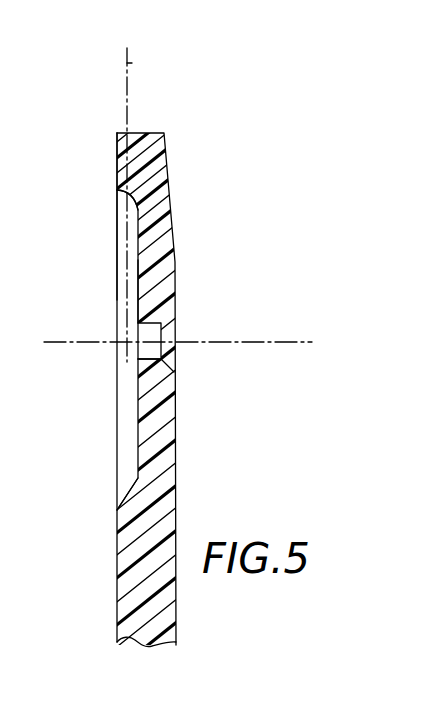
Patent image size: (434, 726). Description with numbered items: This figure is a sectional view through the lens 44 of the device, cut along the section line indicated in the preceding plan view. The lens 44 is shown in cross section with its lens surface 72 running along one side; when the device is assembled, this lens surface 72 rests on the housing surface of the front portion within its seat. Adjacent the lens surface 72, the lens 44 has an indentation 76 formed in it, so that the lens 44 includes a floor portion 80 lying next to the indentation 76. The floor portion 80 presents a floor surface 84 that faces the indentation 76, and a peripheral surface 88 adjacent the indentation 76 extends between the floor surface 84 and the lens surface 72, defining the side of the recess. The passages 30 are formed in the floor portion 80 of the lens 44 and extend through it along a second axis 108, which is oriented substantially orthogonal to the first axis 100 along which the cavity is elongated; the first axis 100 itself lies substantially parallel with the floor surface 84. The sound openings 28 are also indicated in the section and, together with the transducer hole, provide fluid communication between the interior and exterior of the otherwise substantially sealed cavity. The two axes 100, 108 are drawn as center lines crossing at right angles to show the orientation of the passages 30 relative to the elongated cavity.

The first axis 100 is at (131, 63).
The lens 44 is at (141, 133).
The lens surface 72 is at (117, 155).
The peripheral surface 88 is at (121, 193).
The floor portion 80 is at (137, 247).
The floor surface 84 is at (138, 295).
The sound openings 28 is at (168, 330).
The passages 30 is at (146, 360).
The indentation 76 is at (127, 497).
The second axis 108 is at (262, 342).